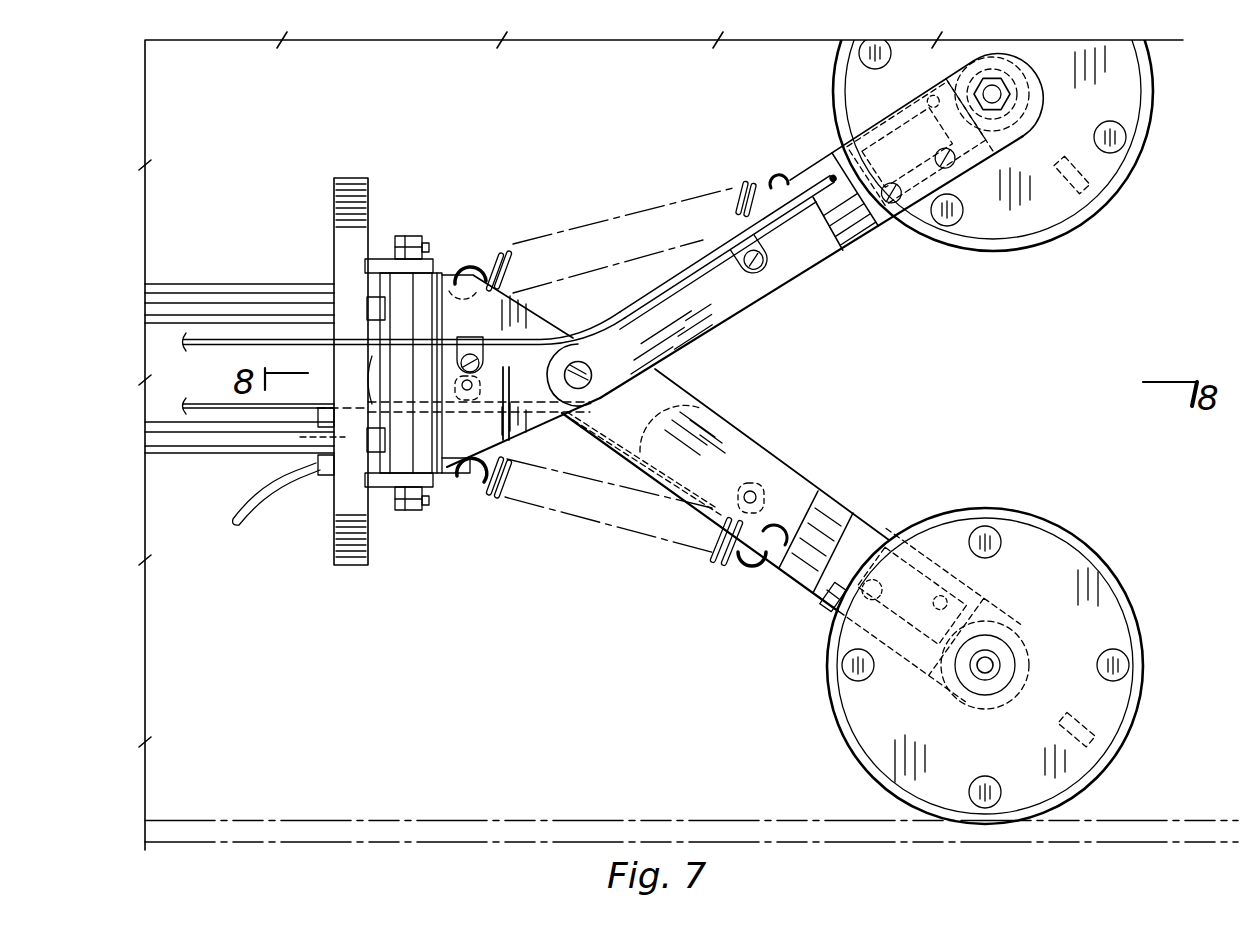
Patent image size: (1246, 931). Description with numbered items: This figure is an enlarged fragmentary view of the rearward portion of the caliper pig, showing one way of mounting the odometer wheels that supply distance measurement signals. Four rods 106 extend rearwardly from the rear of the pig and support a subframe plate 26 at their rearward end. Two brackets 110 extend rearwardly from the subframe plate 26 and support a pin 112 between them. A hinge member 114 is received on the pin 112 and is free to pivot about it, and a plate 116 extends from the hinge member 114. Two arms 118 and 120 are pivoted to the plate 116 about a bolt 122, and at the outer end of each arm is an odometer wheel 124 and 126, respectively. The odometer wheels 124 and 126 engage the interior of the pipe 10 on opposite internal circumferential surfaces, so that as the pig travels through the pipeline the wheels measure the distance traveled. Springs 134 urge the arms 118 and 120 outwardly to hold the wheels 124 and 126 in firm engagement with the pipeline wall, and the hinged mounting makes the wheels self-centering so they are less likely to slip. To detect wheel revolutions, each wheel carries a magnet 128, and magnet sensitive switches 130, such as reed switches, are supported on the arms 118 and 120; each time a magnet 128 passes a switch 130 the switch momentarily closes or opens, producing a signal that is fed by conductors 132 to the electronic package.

The pipe 10 is at (935, 845).
The subframe plate 26 is at (353, 207).
The rods 106 is at (190, 288).
The brackets 110 is at (377, 262).
The pin 112 is at (423, 503).
The hinge member 114 is at (420, 302).
The plate 116 is at (537, 417).
The arm 118 is at (755, 288).
The arm 120 is at (807, 495).
The bolt 122 is at (592, 375).
The odometer wheel 124 is at (1080, 222).
The odometer wheel 126 is at (1037, 520).
The magnet 128 is at (1092, 186).
The magnet sensitive switch 130 is at (922, 235).
The conductors 132 is at (612, 318).
The springs 134 is at (582, 240).